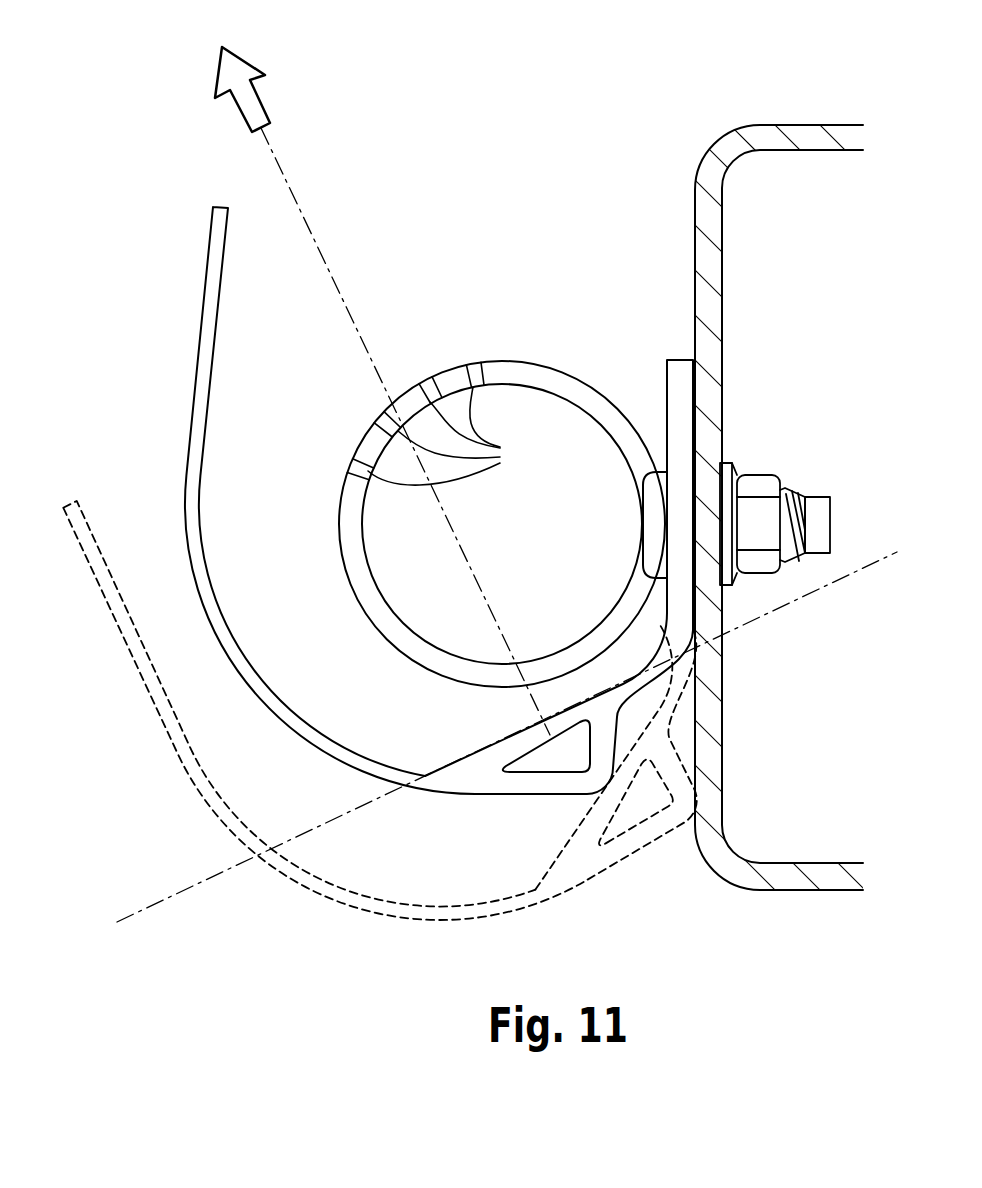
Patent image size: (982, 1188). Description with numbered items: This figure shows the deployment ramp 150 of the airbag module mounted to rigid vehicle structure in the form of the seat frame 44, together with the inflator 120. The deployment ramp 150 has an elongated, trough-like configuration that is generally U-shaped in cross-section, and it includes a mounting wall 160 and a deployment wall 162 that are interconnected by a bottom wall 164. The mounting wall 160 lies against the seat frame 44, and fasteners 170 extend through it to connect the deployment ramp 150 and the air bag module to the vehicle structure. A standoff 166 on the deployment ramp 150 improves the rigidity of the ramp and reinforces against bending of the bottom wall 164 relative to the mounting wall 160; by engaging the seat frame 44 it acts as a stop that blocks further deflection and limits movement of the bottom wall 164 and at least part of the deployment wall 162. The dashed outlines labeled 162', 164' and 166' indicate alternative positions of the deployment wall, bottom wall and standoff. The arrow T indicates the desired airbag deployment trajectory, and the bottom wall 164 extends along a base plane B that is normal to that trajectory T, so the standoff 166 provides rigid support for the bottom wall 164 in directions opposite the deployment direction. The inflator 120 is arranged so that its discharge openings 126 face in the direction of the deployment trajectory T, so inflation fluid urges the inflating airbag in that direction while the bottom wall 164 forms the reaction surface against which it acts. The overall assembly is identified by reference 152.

The seat frame 44 is at (707, 265).
The inflator 120 is at (603, 394).
The discharge openings 126 is at (447, 423).
The deployment ramp 150 is at (430, 168).
The clamp assembly 152 is at (492, 333).
The mounting wall 160 is at (683, 387).
The deployment wall 162 is at (330, 500).
The bottom wall 164 is at (521, 703).
The standoff 166 is at (521, 785).
The fasteners 170 is at (817, 518).
The strap arm in alternate position 162' is at (309, 700).
The support arm in alternate position 164' is at (592, 791).
The cutout in alternate position 166' is at (624, 846).
The deployment trajectory T is at (233, 82).
The base plane B is at (167, 900).